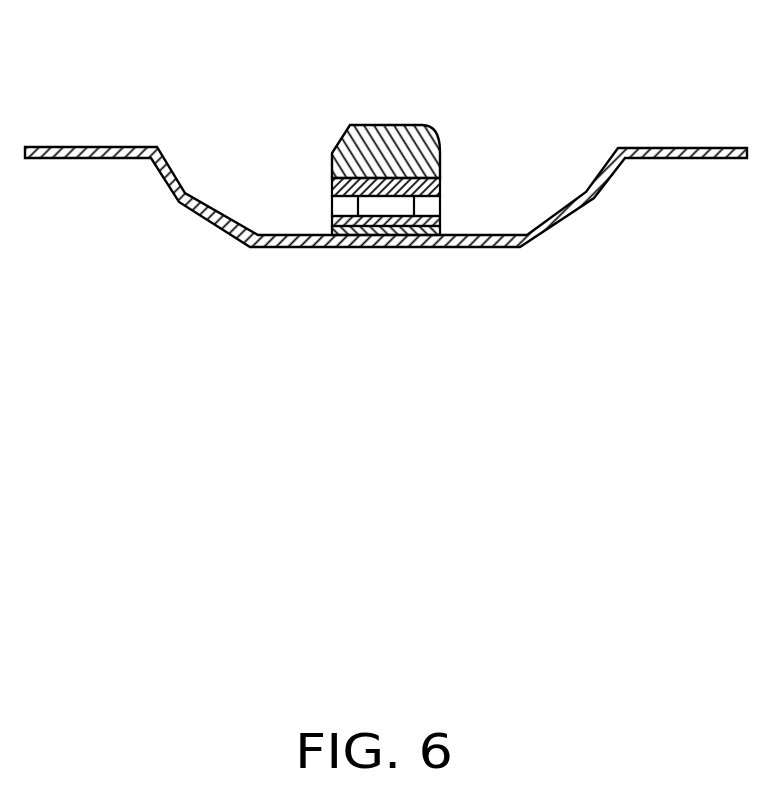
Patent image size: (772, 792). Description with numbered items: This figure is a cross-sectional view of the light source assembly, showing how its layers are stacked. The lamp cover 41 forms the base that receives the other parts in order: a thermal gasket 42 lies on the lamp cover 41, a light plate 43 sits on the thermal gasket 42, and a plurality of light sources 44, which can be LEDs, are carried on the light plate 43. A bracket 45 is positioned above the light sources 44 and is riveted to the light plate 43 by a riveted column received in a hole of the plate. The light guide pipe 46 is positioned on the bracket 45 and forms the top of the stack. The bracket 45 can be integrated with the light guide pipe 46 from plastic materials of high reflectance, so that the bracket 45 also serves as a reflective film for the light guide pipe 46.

The lamp cover 41 is at (448, 240).
The thermal gasket 42 is at (357, 232).
The light plate 43 is at (437, 221).
The light sources 44 is at (332, 204).
The bracket 45 is at (342, 187).
The light guide pipe 46 is at (377, 138).